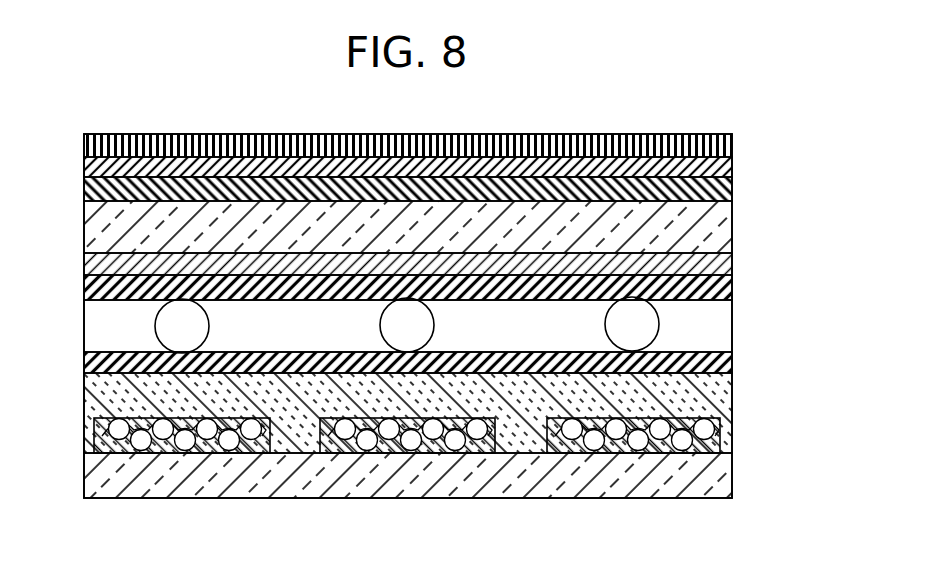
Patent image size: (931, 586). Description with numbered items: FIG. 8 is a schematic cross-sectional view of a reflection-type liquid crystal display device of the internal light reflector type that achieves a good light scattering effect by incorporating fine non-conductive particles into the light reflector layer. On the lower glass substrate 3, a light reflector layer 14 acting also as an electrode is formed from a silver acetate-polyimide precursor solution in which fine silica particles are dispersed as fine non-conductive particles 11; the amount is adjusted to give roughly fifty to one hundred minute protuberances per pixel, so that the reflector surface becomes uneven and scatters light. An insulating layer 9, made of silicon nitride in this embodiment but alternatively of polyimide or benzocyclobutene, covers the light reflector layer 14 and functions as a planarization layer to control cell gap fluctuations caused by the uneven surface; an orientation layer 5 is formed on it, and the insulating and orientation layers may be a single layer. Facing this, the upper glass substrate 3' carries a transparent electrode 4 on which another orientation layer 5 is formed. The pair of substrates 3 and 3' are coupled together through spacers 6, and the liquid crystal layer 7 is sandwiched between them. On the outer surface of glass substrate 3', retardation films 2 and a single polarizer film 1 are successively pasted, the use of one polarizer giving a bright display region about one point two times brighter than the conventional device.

The polarizer film 1 is at (733, 141).
The retardation films 2 is at (733, 165).
The glass substrate 3' is at (439, 227).
The transparent electrode 4 is at (733, 262).
The orientation layer 5 is at (733, 288).
The spacers 6 is at (650, 323).
The liquid crystal layer 7 is at (718, 337).
The insulating layer 9 is at (733, 405).
The fine non-conductive particles 11 is at (410, 437).
The light reflector layer 14 is at (255, 450).
The glass substrate 3 is at (408, 500).